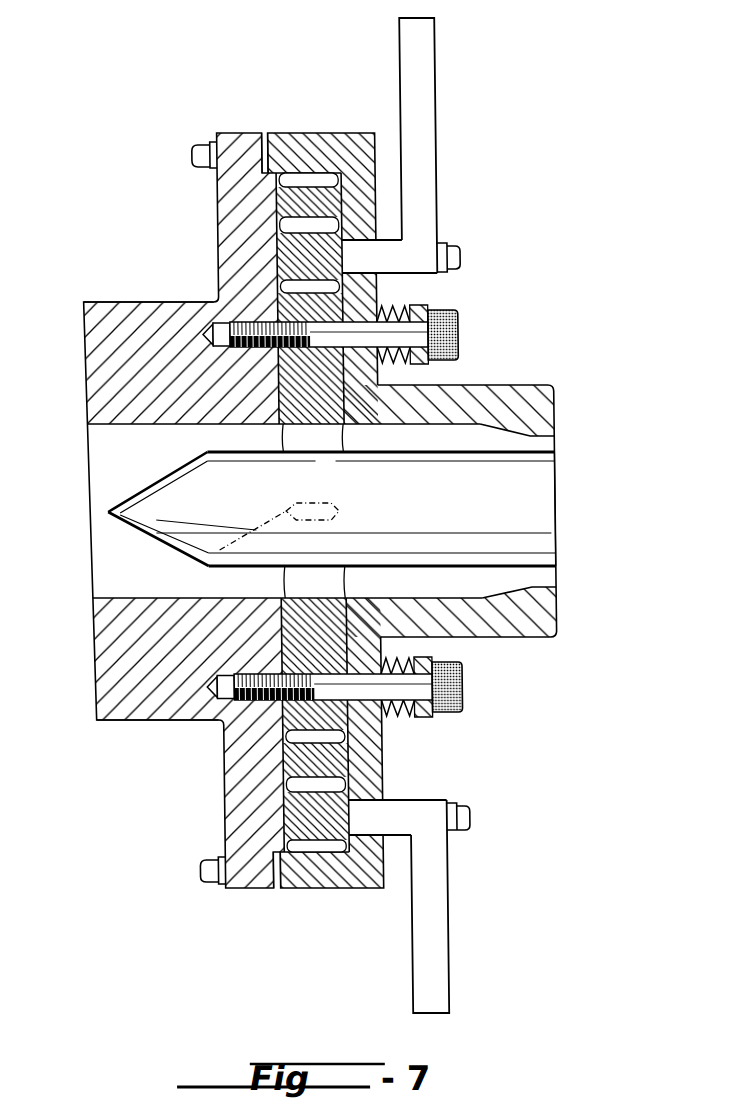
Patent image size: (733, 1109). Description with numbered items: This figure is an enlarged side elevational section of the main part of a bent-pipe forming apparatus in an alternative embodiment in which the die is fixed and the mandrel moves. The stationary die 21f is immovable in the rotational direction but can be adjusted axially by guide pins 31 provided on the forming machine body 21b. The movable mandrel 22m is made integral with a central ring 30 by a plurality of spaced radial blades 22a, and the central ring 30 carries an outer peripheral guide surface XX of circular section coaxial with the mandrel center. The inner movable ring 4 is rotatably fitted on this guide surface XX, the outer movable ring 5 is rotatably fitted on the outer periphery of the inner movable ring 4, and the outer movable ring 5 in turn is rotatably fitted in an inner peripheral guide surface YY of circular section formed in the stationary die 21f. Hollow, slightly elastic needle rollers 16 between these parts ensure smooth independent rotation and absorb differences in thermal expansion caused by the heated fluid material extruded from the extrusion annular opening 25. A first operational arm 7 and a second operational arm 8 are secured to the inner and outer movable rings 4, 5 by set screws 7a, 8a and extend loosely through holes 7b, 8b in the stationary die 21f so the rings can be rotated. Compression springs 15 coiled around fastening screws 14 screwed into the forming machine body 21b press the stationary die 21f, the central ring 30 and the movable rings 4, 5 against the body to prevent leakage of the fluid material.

The inner movable ring 4 is at (292, 233).
The outer movable ring 5 is at (296, 180).
The first operational arm 7 is at (424, 97).
The set screw 7a is at (461, 254).
The hole 7b is at (361, 236).
The second operational arm 8 is at (428, 930).
The set screw 8a is at (462, 815).
The hole 8b is at (364, 790).
The fastening screw 14 is at (455, 328).
The compression spring 15 is at (400, 312).
The roller 16 is at (282, 180).
The forming machine body 21b is at (124, 315).
The stationary die 21f is at (543, 403).
The radial blade 22a is at (288, 583).
The movable mandrel 22m is at (540, 503).
The extrusion annular opening 25 is at (545, 576).
The central ring 30 is at (282, 387).
The guide pin 31 is at (258, 150).
The outer peripheral guide surface XX is at (291, 262).
The inner peripheral guide surface YY is at (305, 166).